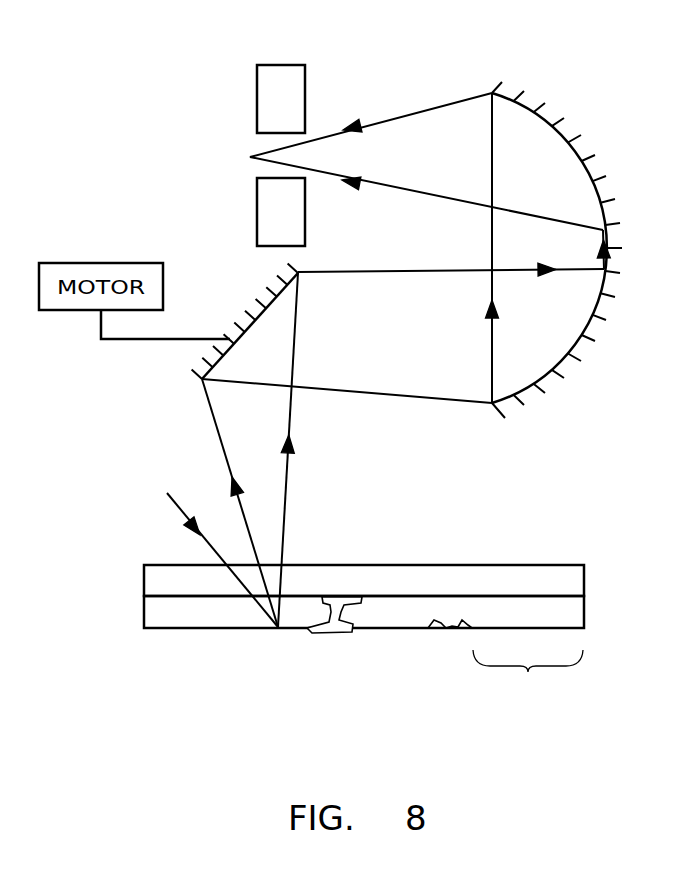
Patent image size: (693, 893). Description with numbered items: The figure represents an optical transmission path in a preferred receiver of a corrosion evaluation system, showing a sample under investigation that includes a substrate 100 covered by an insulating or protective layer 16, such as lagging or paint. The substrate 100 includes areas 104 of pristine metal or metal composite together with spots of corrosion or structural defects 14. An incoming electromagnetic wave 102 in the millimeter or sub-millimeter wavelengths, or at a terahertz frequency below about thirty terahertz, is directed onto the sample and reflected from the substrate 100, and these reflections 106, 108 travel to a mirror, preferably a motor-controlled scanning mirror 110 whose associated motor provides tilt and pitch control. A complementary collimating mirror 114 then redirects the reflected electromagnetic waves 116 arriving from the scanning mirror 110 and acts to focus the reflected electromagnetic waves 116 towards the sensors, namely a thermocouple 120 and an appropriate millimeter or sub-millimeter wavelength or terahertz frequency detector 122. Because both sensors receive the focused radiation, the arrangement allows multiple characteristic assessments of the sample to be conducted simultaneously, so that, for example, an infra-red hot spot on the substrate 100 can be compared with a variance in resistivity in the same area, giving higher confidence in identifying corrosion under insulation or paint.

The spots of corrosion or structural defects 14 is at (443, 630).
The insulating or protective layer 16 is at (157, 580).
The substrate 100 is at (183, 608).
The incoming electromagnetic wave 102 is at (177, 513).
The areas of pristine metal or metal composite 104 is at (528, 679).
The reflection 106 is at (218, 440).
The reflection 108 is at (293, 407).
The scanning mirror 110 is at (247, 303).
The collimating mirror 114 is at (557, 368).
The reflected electromagnetic waves 116 is at (407, 270).
The thermocouple 120 is at (257, 97).
The detector 122 is at (257, 197).